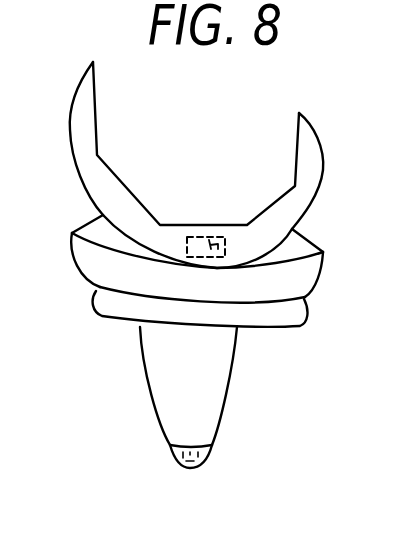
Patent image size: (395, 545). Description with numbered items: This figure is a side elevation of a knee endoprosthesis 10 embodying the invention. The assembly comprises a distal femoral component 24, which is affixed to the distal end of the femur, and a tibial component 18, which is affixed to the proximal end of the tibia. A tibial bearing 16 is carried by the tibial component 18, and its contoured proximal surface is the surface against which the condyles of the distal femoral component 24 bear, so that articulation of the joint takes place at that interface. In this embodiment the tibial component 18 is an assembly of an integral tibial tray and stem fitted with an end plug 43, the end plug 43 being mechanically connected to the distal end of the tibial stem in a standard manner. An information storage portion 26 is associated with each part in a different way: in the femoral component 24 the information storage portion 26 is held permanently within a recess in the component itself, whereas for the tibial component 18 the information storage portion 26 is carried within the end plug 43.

The knee endoprosthesis 10 is at (294, 134).
The tibial bearing 16 is at (98, 264).
The tibial component 18 is at (158, 357).
The distal femoral component 24 is at (90, 130).
The information storage portion 26 is at (236, 199).
The end plug 43 is at (202, 462).